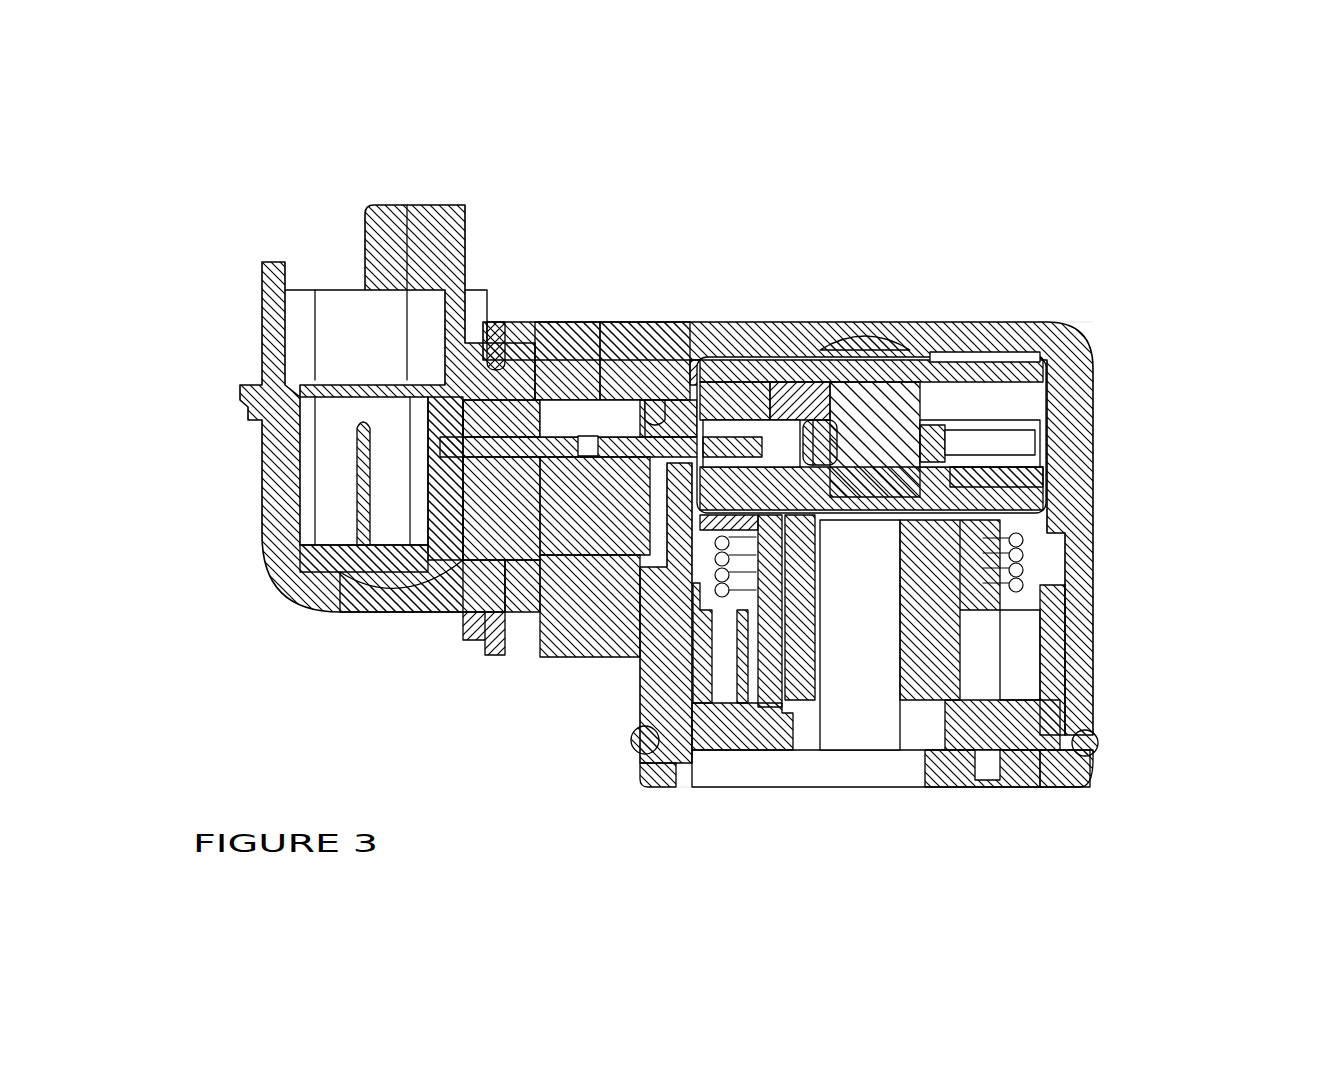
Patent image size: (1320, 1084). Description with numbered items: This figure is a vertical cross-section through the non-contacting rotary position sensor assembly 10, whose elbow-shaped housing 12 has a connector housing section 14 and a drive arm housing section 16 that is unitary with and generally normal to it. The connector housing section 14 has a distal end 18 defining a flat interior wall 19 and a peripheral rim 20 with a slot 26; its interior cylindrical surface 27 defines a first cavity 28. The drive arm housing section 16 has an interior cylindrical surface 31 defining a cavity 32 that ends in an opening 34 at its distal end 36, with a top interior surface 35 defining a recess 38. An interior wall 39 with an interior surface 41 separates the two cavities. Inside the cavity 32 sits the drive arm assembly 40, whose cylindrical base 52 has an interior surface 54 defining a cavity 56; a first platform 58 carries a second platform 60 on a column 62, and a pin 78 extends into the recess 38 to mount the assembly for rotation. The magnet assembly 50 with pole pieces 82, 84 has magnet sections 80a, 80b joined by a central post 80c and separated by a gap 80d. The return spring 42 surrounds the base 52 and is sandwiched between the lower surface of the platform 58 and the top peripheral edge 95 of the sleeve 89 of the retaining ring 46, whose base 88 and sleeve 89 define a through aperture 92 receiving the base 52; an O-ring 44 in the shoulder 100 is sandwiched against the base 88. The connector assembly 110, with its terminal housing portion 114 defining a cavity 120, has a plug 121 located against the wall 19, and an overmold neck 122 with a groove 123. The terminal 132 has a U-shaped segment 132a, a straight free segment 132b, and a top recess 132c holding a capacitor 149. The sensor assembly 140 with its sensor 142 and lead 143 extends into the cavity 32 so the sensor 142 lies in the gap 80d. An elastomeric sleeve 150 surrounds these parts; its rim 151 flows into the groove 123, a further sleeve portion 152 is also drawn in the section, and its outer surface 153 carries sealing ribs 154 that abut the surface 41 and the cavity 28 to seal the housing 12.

The non-contacting rotary position sensor assembly 10 is at (950, 160).
The housing 12 is at (1085, 325).
The connector housing section 14 is at (610, 545).
The drive arm housing section 16 is at (1065, 610).
The distal end 18 is at (466, 320).
The flat interior wall 19 is at (540, 640).
The rim 20 is at (497, 300).
The slot 26 is at (512, 325).
The interior cylindrical surface 27 is at (645, 322).
The first interior cavity 28 is at (640, 560).
The interior cylindrical surface 31 is at (1040, 525).
The interior cavity 32 is at (660, 560).
The opening 34 is at (699, 798).
The top interior surface 35 is at (952, 322).
The distal end 36 is at (1090, 790).
The recess 38 is at (853, 322).
The interior wall 39 is at (712, 500).
The drive arm assembly 40 is at (985, 352).
The interior surface 41 is at (775, 505).
The return spring 42 is at (1030, 550).
The O-ring 44 is at (1100, 745).
The retaining ring 46 is at (1070, 588).
The magnet assembly 50 is at (933, 322).
The cylindrical base 52 is at (1030, 595).
The interior cylindrically-shaped surface 54 is at (900, 630).
The interior cavity 56 is at (960, 465).
The first magnet retention overmolded platform 58 is at (990, 480).
The second magnet retention overmold platform 60 is at (1010, 432).
The column 62 is at (1045, 392).
The pin 78 is at (830, 322).
The upper magnet section 80a is at (713, 322).
The lower magnet section 80b is at (797, 322).
The central post 80c is at (888, 322).
The gap 80d is at (750, 322).
The magnet pole piece 82 is at (1020, 352).
The magnet pole piece 84 is at (1000, 500).
The base 88 is at (1095, 775).
The sleeve 89 is at (1068, 582).
The through aperture 92 is at (935, 690).
The top peripheral edge 95 is at (1040, 600).
The shoulder 100 is at (690, 788).
The connector assembly 110 is at (260, 525).
The terminal housing portion 114 is at (250, 452).
The interior cavity 120 is at (335, 312).
The plug 121 is at (428, 375).
The overmold neck 122 is at (460, 595).
The circumferential groove 123 is at (528, 378).
The terminal 132 is at (370, 408).
The U-shaped first segment 132a is at (400, 592).
The straight second free segment 132b is at (425, 592).
The top recess 132c is at (412, 445).
The sensor assembly 140 is at (662, 322).
The sensor 142 is at (747, 322).
The lead 143 is at (570, 438).
The capacitor 149 is at (440, 440).
The protective sensor sleeve 150 is at (642, 483).
The rim 151 is at (500, 598).
The lower middle block 152 is at (585, 560).
The outer surface 153 is at (620, 568).
The sealing ribs 154 is at (630, 322).